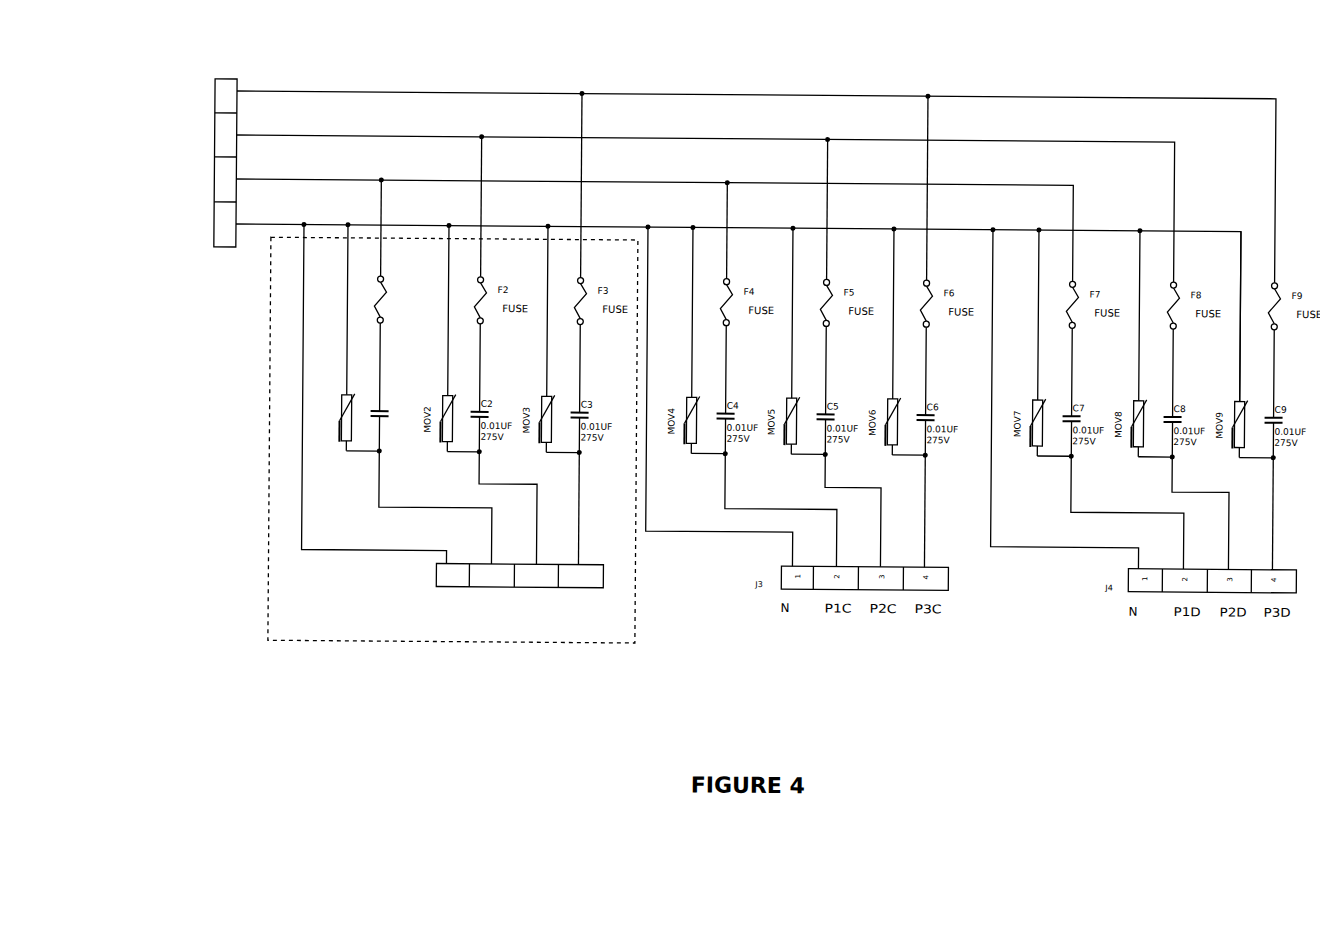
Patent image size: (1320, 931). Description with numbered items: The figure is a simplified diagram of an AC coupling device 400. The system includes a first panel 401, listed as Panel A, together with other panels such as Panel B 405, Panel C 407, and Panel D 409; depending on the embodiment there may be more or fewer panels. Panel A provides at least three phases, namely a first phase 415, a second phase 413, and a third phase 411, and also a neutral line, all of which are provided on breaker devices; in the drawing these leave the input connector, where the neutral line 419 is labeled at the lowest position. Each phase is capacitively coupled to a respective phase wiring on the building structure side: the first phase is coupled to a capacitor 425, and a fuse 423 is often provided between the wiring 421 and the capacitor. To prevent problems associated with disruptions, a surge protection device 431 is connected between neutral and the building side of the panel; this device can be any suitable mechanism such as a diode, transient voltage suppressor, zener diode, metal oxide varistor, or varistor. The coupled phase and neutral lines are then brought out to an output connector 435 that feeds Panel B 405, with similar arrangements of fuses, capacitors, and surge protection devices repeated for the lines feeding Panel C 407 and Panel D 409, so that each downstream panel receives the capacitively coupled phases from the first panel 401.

The AC coupling device 400 is at (1117, 80).
The first panel 401 is at (171, 167).
The Panel B 405 is at (594, 664).
The Panel C 407 is at (907, 668).
The Panel D 409 is at (1222, 676).
The Phase 3 411 is at (239, 75).
The Phase 2 413 is at (237, 122).
The Phase 1 415 is at (237, 167).
The neutral line connector 419 is at (215, 247).
The wiring 421 is at (383, 236).
The fuse 423 is at (389, 286).
The capacitor 425 is at (396, 402).
The surge protection device 431 is at (341, 440).
The output connector 435 is at (507, 585).